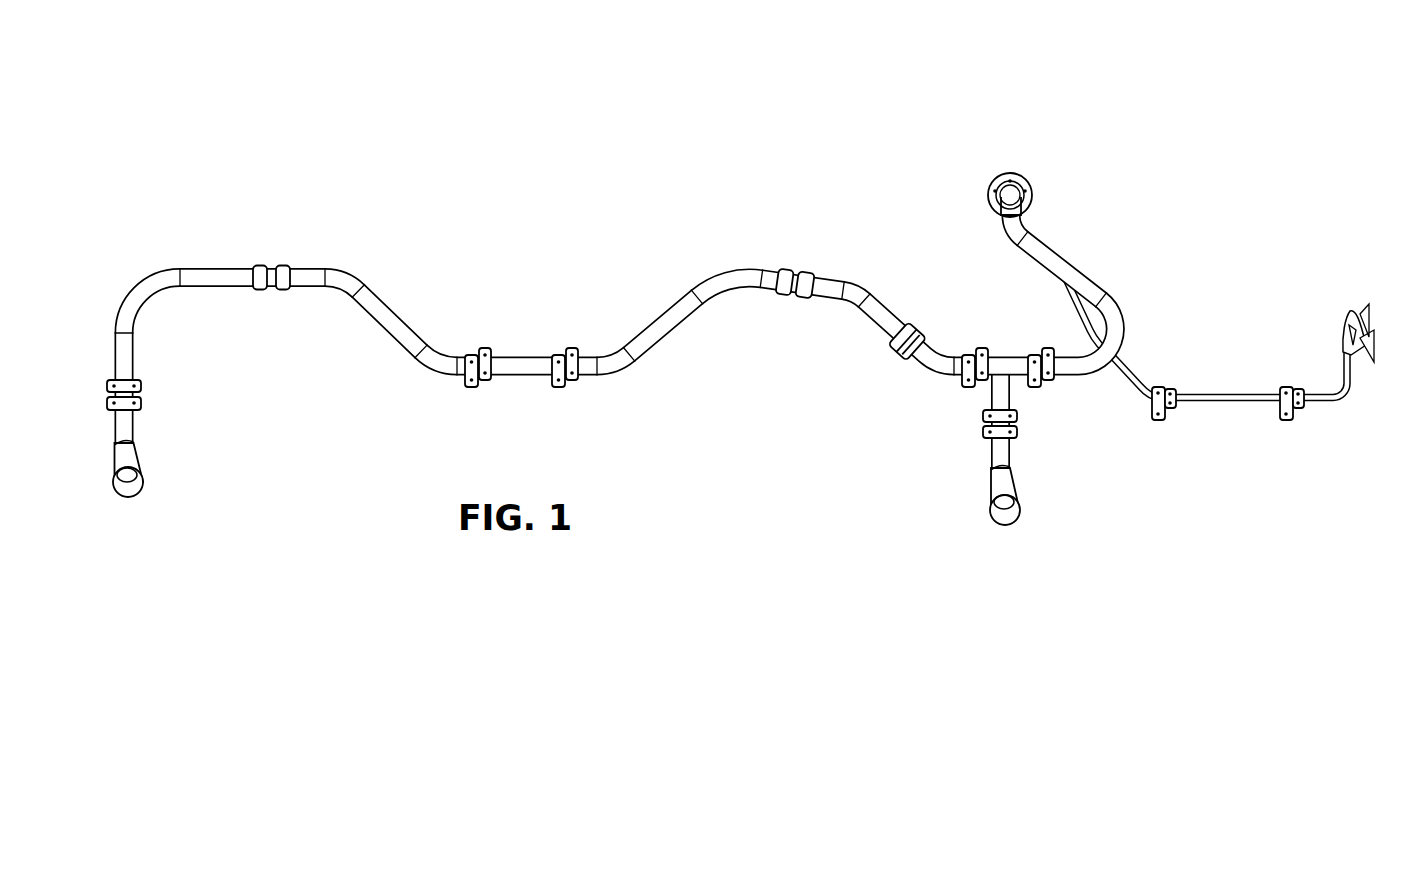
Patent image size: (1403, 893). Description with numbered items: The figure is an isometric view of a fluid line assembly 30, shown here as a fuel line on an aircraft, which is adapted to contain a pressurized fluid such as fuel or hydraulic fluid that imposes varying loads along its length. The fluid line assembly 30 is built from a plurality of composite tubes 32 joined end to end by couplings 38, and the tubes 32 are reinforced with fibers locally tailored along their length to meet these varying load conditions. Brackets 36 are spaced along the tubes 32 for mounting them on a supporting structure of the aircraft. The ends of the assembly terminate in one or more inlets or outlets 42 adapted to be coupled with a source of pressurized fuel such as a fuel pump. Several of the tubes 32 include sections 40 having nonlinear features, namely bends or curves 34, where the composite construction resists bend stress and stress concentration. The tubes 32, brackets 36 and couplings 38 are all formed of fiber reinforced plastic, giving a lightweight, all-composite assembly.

The fluid line assembly 30 is at (572, 86).
The composite tube 32 is at (217, 274).
The bend or curve 34 is at (134, 288).
The bracket 36 is at (141, 404).
The coupling 38 is at (801, 298).
The section having nonlinear features 40 is at (130, 218).
The inlet or outlet 42 is at (127, 498).